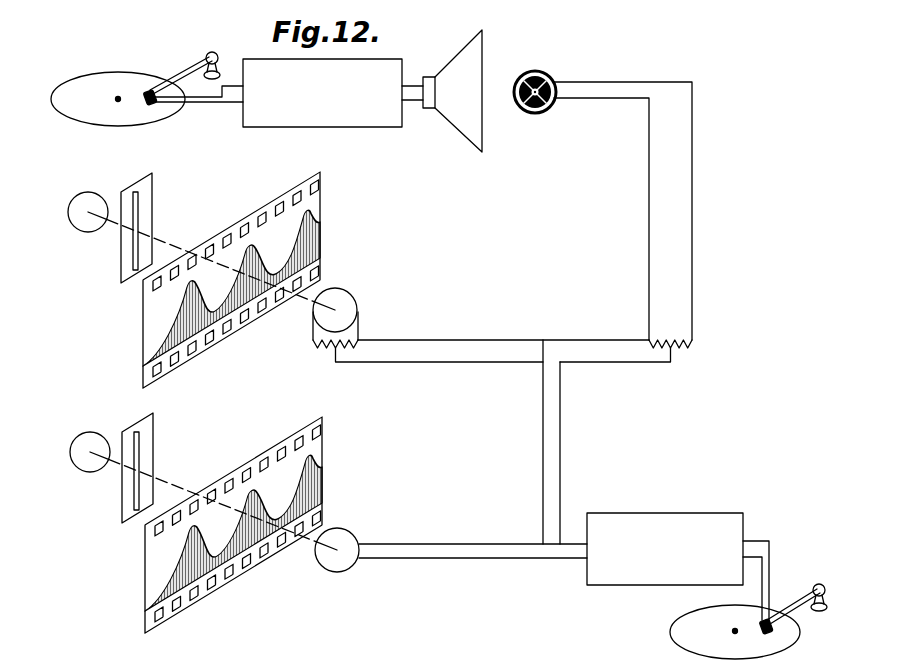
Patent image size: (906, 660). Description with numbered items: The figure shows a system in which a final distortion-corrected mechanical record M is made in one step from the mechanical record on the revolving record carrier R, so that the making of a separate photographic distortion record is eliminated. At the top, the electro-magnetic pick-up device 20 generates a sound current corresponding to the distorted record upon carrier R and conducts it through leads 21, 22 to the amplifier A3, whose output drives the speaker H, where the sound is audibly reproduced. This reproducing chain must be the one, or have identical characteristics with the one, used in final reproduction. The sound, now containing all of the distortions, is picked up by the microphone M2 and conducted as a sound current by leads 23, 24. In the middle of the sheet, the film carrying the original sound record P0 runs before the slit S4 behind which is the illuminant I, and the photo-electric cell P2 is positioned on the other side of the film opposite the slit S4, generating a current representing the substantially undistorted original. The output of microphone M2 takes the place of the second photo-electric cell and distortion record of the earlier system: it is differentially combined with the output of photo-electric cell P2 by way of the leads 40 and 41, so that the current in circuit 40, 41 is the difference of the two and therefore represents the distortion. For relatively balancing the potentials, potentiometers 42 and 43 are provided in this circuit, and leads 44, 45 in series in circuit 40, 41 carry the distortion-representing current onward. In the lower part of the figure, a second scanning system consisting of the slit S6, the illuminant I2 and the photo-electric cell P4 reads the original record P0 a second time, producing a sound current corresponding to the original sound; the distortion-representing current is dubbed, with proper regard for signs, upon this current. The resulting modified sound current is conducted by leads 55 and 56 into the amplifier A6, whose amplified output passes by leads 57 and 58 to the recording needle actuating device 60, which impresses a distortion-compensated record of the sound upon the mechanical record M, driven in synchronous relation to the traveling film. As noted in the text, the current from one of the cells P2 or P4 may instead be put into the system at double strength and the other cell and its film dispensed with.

The revolving mechanical sound record carrier R is at (98, 77).
The electro-magnetic pick-up device 20 is at (148, 88).
The lead 21 is at (224, 82).
The lead 22 is at (226, 104).
The amplifier A3 is at (285, 115).
The speaker H is at (455, 116).
The microphone M2 is at (566, 56).
The lead 23 is at (620, 64).
The lead 24 is at (610, 100).
The illuminant I is at (78, 198).
The slit S4 is at (138, 219).
The original sound record P0 is at (185, 318).
The photo-electric cell P2 is at (372, 282).
The lead 40 is at (458, 340).
The lead 41 is at (462, 364).
The potentiometer 42 is at (335, 350).
The potentiometer 43 is at (679, 347).
The lead 44 is at (543, 442).
The lead 45 is at (561, 422).
The illuminant I2 is at (96, 436).
The slit S6 is at (139, 459).
The photo-electric cell P4 is at (337, 572).
The lead 55 is at (436, 544).
The lead 56 is at (440, 560).
The amplifier A6 is at (664, 524).
The lead 57 is at (796, 538).
The lead 58 is at (758, 574).
The mechanical record M is at (700, 630).
The recording needle actuating device 60 is at (772, 630).